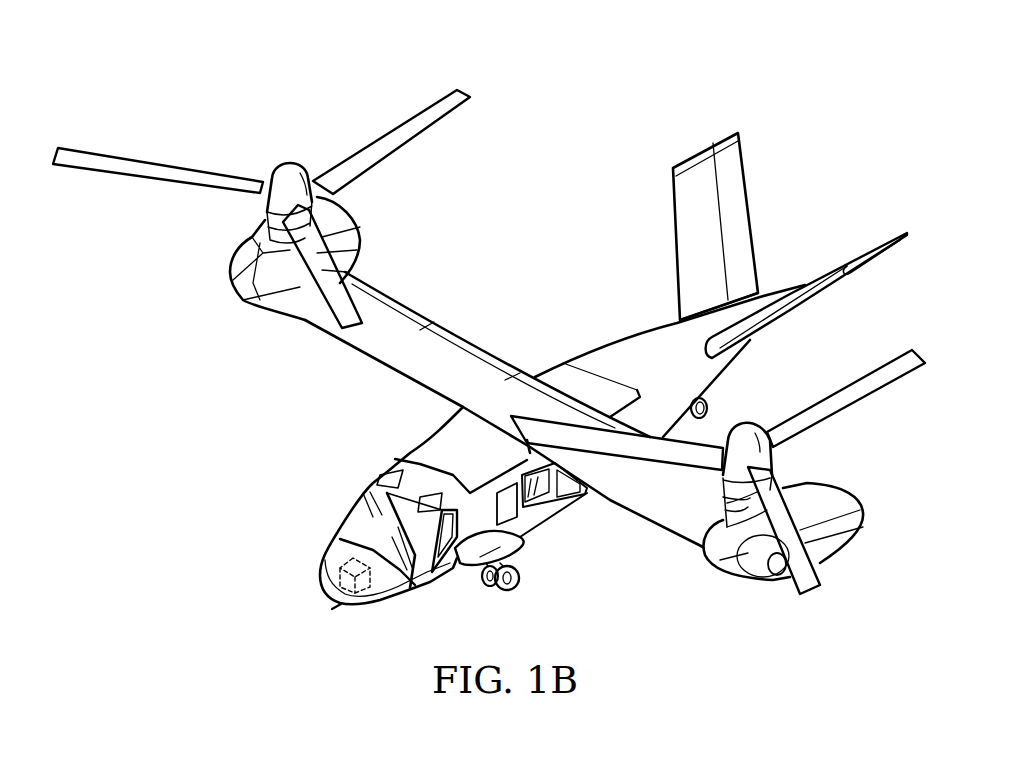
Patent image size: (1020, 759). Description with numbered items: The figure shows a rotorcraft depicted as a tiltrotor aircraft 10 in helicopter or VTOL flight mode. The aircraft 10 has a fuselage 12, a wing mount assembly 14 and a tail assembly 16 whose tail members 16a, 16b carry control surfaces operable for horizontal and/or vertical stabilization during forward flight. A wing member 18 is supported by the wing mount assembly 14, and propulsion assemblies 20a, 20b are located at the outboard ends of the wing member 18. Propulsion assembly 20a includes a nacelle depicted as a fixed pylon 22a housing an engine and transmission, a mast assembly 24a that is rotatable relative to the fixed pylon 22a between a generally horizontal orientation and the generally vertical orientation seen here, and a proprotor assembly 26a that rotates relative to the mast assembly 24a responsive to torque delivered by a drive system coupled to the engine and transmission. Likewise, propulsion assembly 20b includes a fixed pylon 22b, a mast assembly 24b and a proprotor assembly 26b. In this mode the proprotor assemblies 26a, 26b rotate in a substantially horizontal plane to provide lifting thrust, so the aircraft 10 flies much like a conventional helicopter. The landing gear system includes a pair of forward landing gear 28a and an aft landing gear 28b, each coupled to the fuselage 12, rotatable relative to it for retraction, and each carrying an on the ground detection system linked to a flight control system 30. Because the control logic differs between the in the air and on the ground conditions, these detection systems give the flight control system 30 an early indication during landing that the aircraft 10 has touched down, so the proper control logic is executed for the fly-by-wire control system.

The tiltrotor aircraft 10 is at (602, 150).
The fuselage 12 is at (648, 346).
The wing mount assembly 14 is at (573, 373).
The tail assembly 16 is at (762, 229).
The tail member 16a is at (828, 283).
The tail member 16b is at (733, 178).
The wing member 18 is at (462, 362).
The propulsion assembly 20a is at (845, 553).
The propulsion assembly 20b is at (371, 242).
The fixed pylon 22a is at (842, 492).
The fixed pylon 22b is at (352, 220).
The mast assembly 24a is at (725, 512).
The mast assembly 24b is at (255, 298).
The proprotor assembly 26a is at (908, 386).
The proprotor assembly 26b is at (280, 156).
The forward landing gear 28a is at (507, 590).
The aft landing gear 28b is at (708, 405).
The flight control system 30 is at (330, 566).